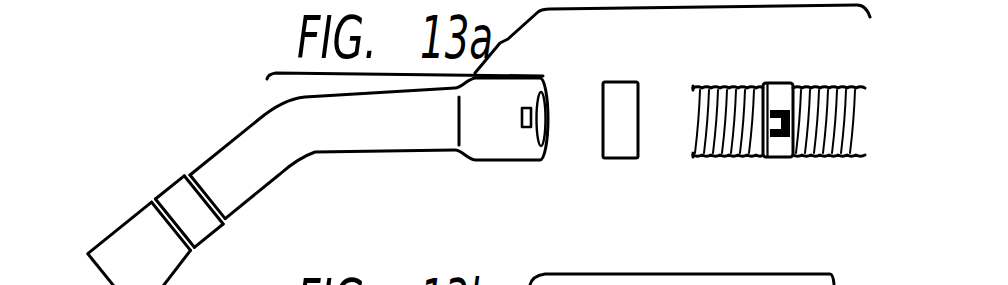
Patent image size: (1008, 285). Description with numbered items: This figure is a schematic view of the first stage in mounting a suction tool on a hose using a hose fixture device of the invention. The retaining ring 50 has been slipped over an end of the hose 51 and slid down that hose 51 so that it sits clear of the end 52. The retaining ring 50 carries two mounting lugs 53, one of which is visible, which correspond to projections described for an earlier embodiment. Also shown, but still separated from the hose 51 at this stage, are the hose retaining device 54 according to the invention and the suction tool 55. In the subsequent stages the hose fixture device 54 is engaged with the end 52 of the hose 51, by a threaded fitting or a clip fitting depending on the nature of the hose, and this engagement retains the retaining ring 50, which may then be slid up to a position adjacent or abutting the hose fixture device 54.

The retaining ring 50 is at (780, 82).
The hose 51 is at (835, 88).
The end 52 is at (735, 88).
The mounting lug 53 is at (782, 140).
The hose retaining device 54 is at (626, 82).
The suction tool 55 is at (228, 140).